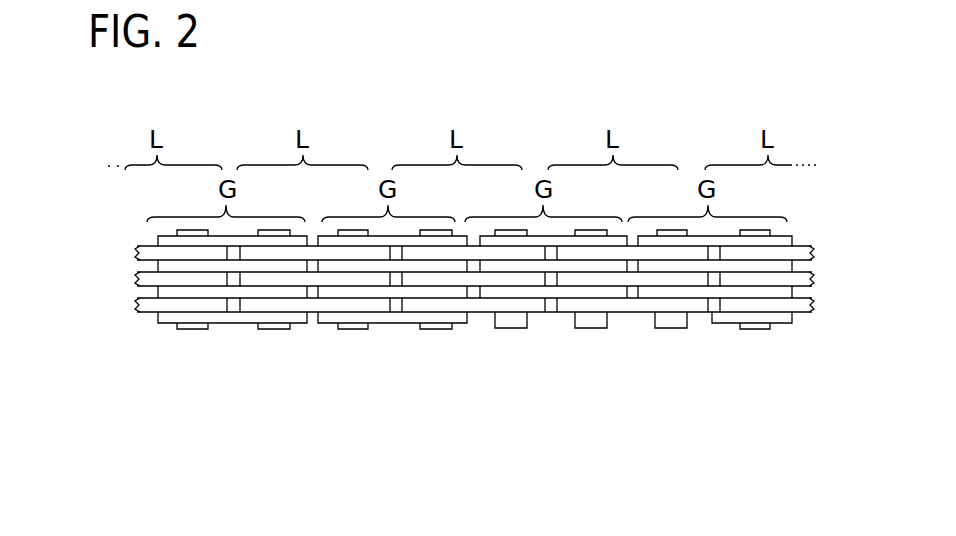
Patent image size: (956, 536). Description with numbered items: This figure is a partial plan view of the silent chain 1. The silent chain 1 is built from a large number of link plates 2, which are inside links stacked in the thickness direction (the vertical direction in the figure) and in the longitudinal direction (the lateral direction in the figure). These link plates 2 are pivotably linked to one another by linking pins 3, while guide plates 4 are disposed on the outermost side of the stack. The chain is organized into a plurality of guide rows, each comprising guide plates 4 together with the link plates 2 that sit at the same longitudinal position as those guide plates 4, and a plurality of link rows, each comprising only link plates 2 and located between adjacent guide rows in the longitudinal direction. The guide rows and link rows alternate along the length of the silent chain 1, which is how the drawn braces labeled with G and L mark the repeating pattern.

The silent chain 1 is at (459, 400).
The link plate 2 is at (152, 297).
The linking pin 3 is at (267, 330).
The guide plate 4 is at (157, 238).